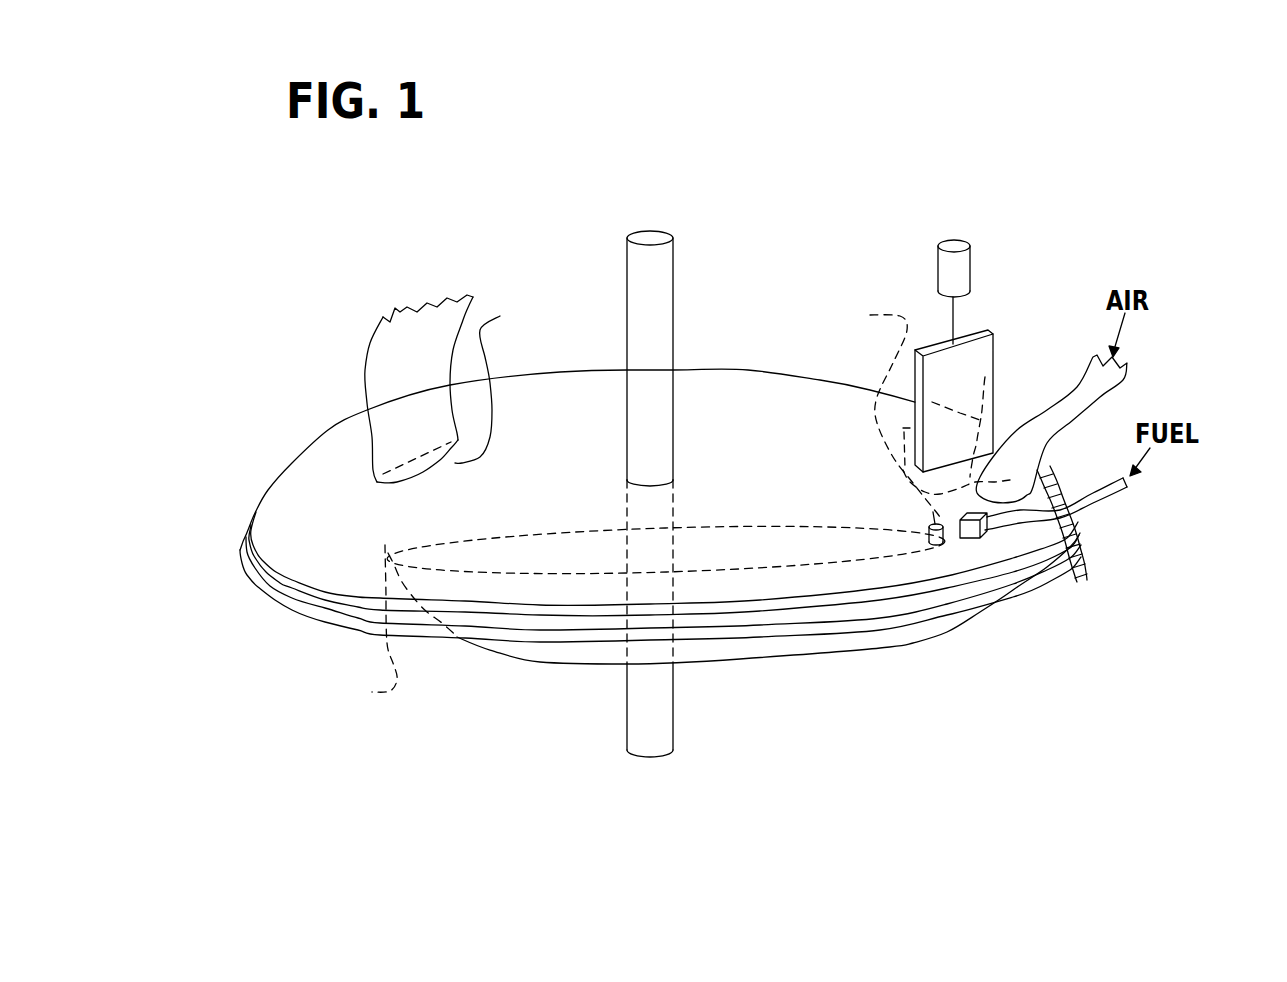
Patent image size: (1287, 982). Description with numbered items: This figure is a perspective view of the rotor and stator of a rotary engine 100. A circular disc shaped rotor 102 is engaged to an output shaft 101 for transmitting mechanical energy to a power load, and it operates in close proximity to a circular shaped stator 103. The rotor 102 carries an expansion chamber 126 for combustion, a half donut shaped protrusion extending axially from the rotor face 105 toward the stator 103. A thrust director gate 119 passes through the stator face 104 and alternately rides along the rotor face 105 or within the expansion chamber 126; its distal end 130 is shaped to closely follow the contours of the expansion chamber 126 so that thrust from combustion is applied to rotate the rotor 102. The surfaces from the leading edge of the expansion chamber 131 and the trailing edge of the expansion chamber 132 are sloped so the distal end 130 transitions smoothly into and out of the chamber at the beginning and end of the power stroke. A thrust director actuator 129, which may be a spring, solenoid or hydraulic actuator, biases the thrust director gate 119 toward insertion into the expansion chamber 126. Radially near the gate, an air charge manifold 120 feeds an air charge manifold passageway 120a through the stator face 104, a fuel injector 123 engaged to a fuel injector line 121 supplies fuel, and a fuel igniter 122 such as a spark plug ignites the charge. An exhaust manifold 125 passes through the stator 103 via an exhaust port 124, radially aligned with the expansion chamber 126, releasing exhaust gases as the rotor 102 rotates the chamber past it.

The rotary engine 100 is at (752, 368).
The output shaft 101 is at (673, 283).
The rotor 102 is at (240, 568).
The stator 103 is at (285, 462).
The stator face 104 is at (577, 417).
The rotor face 105 is at (243, 548).
The thrust director gate 119 is at (993, 336).
The air charge manifold 120 is at (1120, 396).
The air charge manifold passageway 120a is at (1090, 463).
The fuel injector line 121 is at (1102, 503).
The fuel igniter 122 is at (943, 530).
The fuel injector 123 is at (985, 532).
The exhaust port 124 is at (504, 380).
The exhaust manifold 125 is at (364, 361).
The expansion chamber 126 is at (537, 663).
The thrust director actuator 129 is at (970, 256).
The distal end 130 is at (1000, 368).
The leading edge of the expansion chamber 131 is at (631, 615).
The trailing edge of the expansion chamber 132 is at (882, 411).